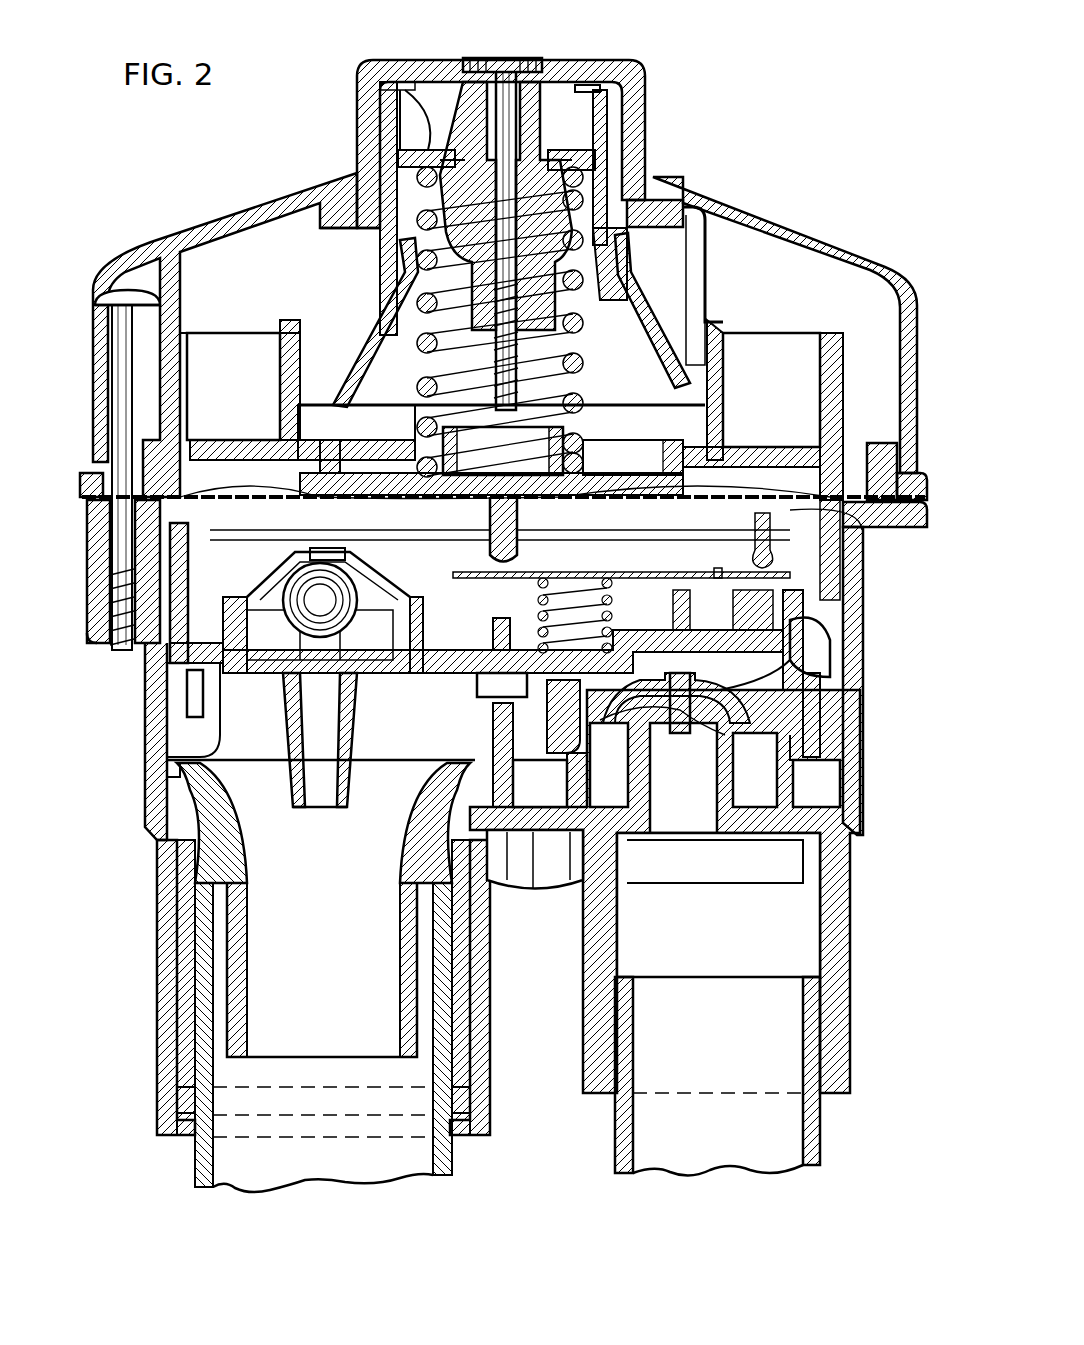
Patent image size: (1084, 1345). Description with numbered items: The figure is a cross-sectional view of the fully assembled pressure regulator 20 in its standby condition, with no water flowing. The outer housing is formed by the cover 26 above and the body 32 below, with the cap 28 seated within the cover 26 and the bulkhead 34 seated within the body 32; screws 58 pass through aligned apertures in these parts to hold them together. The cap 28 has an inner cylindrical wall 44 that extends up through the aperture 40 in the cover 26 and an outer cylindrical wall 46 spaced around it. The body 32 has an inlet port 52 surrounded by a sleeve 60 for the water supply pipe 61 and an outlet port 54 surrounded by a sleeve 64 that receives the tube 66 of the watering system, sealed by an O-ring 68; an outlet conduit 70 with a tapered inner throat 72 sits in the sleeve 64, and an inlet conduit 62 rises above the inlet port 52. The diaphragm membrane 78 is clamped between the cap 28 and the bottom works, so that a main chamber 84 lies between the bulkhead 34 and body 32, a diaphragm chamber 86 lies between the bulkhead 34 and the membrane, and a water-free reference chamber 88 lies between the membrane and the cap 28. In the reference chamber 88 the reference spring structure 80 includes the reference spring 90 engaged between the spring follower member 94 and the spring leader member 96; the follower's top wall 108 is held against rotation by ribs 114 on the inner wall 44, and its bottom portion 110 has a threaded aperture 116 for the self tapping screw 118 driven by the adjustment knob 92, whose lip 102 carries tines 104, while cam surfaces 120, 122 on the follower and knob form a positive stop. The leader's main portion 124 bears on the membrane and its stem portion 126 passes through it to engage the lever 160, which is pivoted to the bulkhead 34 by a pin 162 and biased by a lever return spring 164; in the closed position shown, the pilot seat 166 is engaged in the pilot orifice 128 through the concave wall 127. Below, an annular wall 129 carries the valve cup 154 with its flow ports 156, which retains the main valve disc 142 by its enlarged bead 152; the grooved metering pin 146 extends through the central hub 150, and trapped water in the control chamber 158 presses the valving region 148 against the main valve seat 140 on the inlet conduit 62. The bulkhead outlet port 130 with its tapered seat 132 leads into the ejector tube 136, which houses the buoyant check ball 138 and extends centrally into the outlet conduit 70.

The regulator 20 is at (273, 130).
The cover 26 is at (258, 195).
The cap 28 is at (262, 380).
The body 32 is at (862, 840).
The bulkhead 34 is at (845, 638).
The aperture 40 is at (360, 168).
The inner cylindrical wall 44 is at (390, 235).
The outer cylindrical wall 46 is at (716, 325).
The inlet port 52 is at (710, 855).
The outlet port 54 is at (210, 790).
The screws 58 is at (110, 380).
The sleeve 60 is at (840, 968).
The water supply pipe 61 is at (822, 1125).
The inlet conduit 62 is at (770, 790).
The sleeve 64 is at (168, 950).
The tube 66 is at (200, 1175).
The O-ring 68 is at (180, 1100).
The outlet conduit 70 is at (185, 855).
The tapered inner throat 72 is at (235, 993).
The diaphragm membrane 78 is at (270, 500).
The reference spring structure 80 is at (415, 305).
The main chamber 84 is at (235, 732).
The diaphragm chamber 86 is at (745, 515).
The reference chamber 88 is at (625, 413).
The reference spring 90 is at (583, 330).
The adjustment knob 92 is at (648, 78).
The spring follower member 94 is at (578, 215).
The spring leader member 96 is at (650, 465).
The lip 102 is at (690, 190).
The tines 104 is at (700, 300).
The top wall 108 is at (625, 140).
The bottom portion 110 is at (540, 270).
The ribs 114 is at (402, 122).
The threaded aperture 116 is at (555, 300).
The self tapping screw 118 is at (512, 68).
The cam surfaces 120 is at (420, 105).
The cam surfaces 122 is at (560, 58).
The main portion 124 is at (503, 508).
The stem portion 126 is at (490, 540).
The concave wall 127 is at (770, 678).
The pilot orifice 128 is at (775, 622).
The annular wall 129 is at (800, 762).
The outlet port 130 is at (300, 560).
The tapered seat 132 is at (345, 560).
The ejector tube 136 is at (358, 785).
The check ball 138 is at (358, 600).
The main valve seat 140 is at (795, 745).
The main valve disc 142 is at (770, 725).
The metering pin 146 is at (680, 735).
The valving region 148 is at (608, 728).
The central hub 150 is at (715, 861).
The enlarged bead 152 is at (555, 860).
The valve cup 154 is at (555, 753).
The flow ports 156 is at (744, 736).
The control chamber 158 is at (760, 700).
The lever 160 is at (668, 540).
The pin 162 is at (718, 568).
The lever return spring 164 is at (612, 618).
The pilot seat 166 is at (820, 545).